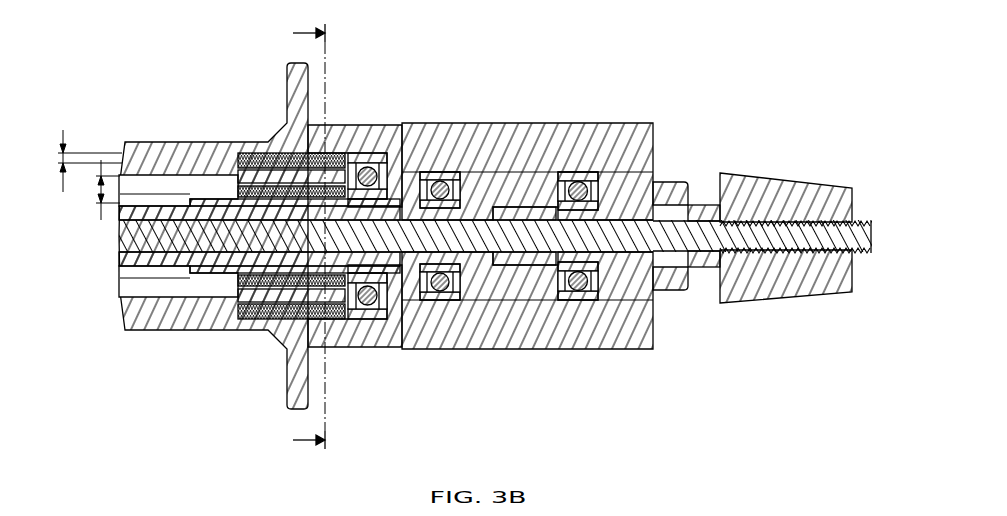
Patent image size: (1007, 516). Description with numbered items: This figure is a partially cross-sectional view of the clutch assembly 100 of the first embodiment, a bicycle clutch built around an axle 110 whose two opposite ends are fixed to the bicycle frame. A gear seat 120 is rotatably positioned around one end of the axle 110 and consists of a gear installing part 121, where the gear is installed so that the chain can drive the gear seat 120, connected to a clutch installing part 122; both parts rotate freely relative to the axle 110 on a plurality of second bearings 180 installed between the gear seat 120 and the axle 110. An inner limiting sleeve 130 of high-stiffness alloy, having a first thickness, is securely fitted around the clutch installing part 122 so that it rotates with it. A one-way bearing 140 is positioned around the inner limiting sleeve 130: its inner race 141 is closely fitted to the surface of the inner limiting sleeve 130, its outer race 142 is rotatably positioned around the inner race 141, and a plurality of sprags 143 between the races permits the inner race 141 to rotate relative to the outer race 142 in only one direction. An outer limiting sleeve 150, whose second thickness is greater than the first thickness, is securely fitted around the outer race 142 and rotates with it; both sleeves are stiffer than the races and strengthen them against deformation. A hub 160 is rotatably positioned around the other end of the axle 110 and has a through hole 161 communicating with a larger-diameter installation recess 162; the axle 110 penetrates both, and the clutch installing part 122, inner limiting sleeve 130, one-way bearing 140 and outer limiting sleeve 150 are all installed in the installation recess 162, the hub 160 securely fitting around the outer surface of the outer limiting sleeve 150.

The clutch assembly 100 is at (147, 42).
The axle 110 is at (685, 181).
The gear seat 120 is at (480, 240).
The gear installing part 121 is at (527, 255).
The clutch installing part 122 is at (369, 350).
The inner limiting sleeve 130 is at (186, 265).
The one-way bearing 140 is at (258, 282).
The inner race 141 is at (232, 284).
The outer race 142 is at (256, 312).
The sprags 143 is at (240, 300).
The outer limiting sleeve 150 is at (334, 264).
The hub 160 is at (170, 142).
The through hole 161 is at (158, 270).
The installation recess 162 is at (246, 179).
The second bearings 180 is at (365, 153).